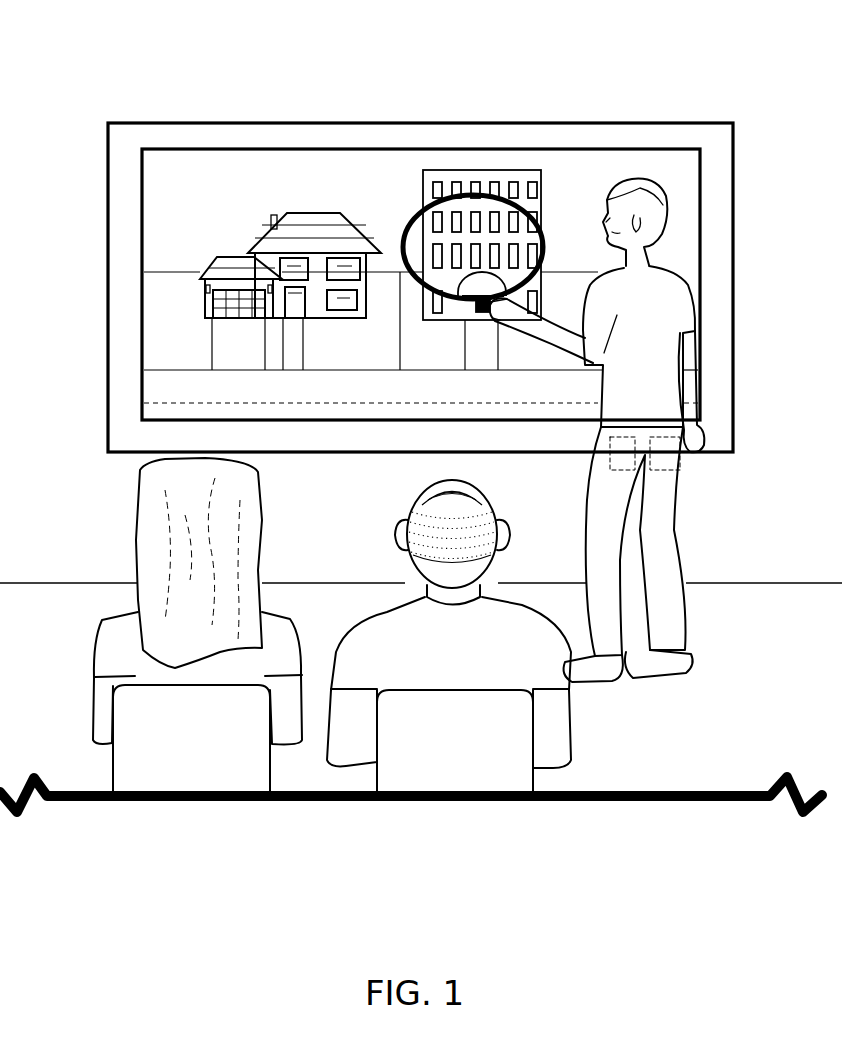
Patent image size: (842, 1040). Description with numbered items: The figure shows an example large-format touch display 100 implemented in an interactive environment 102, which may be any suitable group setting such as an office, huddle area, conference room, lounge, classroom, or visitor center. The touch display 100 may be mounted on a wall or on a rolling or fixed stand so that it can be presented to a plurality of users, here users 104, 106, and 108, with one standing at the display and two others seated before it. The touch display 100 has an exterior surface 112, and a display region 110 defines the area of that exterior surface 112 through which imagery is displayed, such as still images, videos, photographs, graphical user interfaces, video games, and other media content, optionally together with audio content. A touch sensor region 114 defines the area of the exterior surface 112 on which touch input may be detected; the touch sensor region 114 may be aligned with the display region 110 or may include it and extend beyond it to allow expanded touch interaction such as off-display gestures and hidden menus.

The large-format touch display 100 is at (270, 110).
The interactive environment 102 is at (706, 39).
The user 104 is at (665, 271).
The user 106 is at (130, 616).
The user 108 is at (375, 616).
The display region 110 is at (217, 206).
The exterior surface 112 is at (315, 123).
The touch sensor region 114 is at (124, 138).